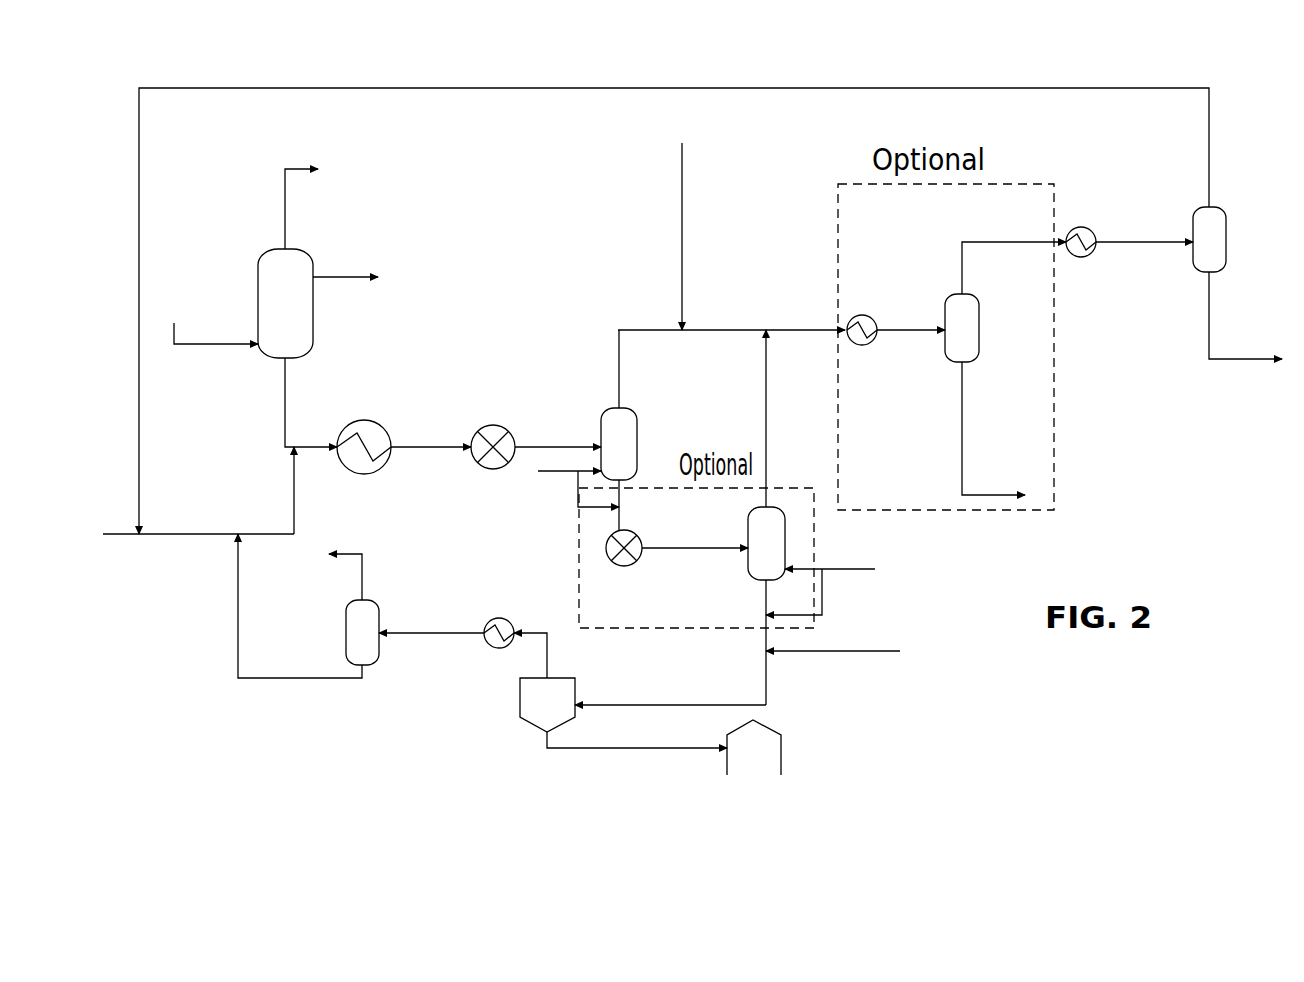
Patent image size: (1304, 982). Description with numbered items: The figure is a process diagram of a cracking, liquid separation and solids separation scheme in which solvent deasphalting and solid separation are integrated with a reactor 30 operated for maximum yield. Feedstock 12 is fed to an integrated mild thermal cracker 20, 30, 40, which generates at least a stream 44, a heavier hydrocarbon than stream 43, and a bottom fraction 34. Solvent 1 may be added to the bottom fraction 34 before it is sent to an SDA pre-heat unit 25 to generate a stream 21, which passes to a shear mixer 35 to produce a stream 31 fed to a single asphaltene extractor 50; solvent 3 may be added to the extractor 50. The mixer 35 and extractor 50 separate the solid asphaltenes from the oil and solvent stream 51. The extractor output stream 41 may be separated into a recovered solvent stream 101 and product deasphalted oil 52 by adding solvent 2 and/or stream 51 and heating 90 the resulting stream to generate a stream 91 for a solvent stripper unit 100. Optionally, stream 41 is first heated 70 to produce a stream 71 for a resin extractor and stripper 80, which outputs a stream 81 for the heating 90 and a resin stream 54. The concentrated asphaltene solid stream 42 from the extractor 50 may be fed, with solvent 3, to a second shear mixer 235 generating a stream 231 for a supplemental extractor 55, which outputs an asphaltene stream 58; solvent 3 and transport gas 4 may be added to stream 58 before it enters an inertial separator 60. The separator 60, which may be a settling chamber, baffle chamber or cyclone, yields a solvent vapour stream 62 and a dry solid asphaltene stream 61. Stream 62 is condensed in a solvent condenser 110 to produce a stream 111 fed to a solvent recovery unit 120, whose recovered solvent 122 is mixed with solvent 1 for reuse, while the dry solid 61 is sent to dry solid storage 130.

The solvent 1 is at (198, 514).
The solvent 2 is at (699, 236).
The solvent 3 is at (706, 543).
The transport gas 4 is at (842, 651).
The feedstock 12 is at (216, 351).
The integrated mild thermal cracker 20 is at (344, 303).
The reactor 30 is at (344, 303).
The integrated mild thermal cracker 40 is at (430, 337).
The stream 21 is at (431, 435).
The SDA pre-heat unit 25 is at (375, 514).
The stream 31 is at (558, 428).
The bottom fraction 34 is at (311, 402).
The shear mixer 35 is at (512, 509).
The stream 41 is at (704, 369).
The concentrated asphaltene solid stream 42 is at (637, 505).
The stream 43 is at (272, 208).
The stream 44 is at (345, 255).
The single asphaltene extractor 50 is at (682, 454).
The stream 51 is at (735, 418).
The product deasphalted oil 52 is at (1217, 318).
The resin stream 54 is at (996, 429).
The supplemental extraction process 55 is at (747, 519).
The asphaltene stream 58 is at (670, 646).
The inertial separator 60 is at (512, 739).
The dry solid asphaltene stream 61 is at (637, 767).
The solvent vapour stream 62 is at (549, 655).
The heating 70 is at (882, 296).
The stream 71 is at (911, 301).
The resin extractor and stripper 80 is at (1022, 336).
The stream 81 is at (999, 249).
The heating 90 is at (1100, 206).
The stream 91 is at (1144, 208).
The solvent stripper unit 100 is at (1278, 249).
The recovered solvent stream 101 is at (674, 284).
The solvent condenser 110 is at (528, 599).
The stream 111 is at (431, 652).
The solvent recovery unit 120 is at (328, 652).
The recovered solvent 122 is at (300, 631).
The dry solid storage 130 is at (830, 742).
The stream 231 is at (695, 567).
The shear mixer 235 is at (647, 609).